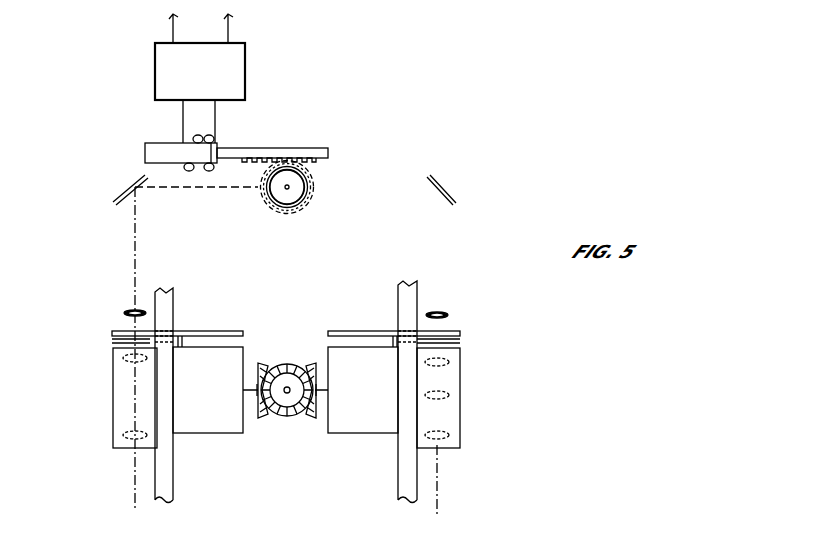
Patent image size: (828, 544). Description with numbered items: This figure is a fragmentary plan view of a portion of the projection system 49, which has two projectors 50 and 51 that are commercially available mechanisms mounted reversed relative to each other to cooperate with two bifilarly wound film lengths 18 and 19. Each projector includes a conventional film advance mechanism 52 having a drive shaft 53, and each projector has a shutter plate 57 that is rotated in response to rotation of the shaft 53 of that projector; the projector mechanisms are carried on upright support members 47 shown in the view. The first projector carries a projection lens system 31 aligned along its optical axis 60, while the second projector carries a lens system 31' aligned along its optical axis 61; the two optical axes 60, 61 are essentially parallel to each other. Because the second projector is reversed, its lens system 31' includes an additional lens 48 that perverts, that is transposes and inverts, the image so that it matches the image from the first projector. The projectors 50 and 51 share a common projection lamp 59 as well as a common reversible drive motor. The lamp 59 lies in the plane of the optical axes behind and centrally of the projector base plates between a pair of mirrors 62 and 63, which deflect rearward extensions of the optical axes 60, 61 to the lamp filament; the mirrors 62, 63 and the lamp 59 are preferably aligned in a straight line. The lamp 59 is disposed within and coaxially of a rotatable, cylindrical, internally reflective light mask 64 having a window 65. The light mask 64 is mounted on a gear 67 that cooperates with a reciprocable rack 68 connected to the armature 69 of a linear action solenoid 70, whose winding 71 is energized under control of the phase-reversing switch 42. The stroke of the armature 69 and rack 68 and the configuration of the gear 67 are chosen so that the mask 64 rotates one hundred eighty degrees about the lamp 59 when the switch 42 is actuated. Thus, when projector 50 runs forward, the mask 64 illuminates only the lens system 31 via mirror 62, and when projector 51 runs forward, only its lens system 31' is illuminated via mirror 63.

The phase-reversing switch 42 is at (245, 57).
The linear action solenoid 70 is at (115, 148).
The winding 71 is at (204, 140).
The reciprocable rack 68 is at (315, 148).
The projection system 49 is at (410, 98).
The armature 69 is at (145, 157).
The mirror 62 is at (120, 192).
The mirror 63 is at (440, 187).
The gear 67 is at (311, 180).
The light mask 64 is at (305, 196).
The window 65 is at (262, 195).
The projection lamp 59 is at (292, 196).
The projection lens system 31 is at (106, 376).
The lens system 31' is at (476, 371).
The shutter plate 57 is at (225, 331).
The drive shaft 53 is at (322, 378).
The film length 18 is at (112, 340).
The film length 19 is at (462, 340).
The lens 48 is at (448, 388).
The projector 50 is at (110, 451).
The projector 51 is at (477, 443).
The film advance mechanism 52 is at (225, 420).
The optical axis 60 is at (135, 500).
The optical axis 61 is at (440, 500).
The support bar 47 is at (173, 480).